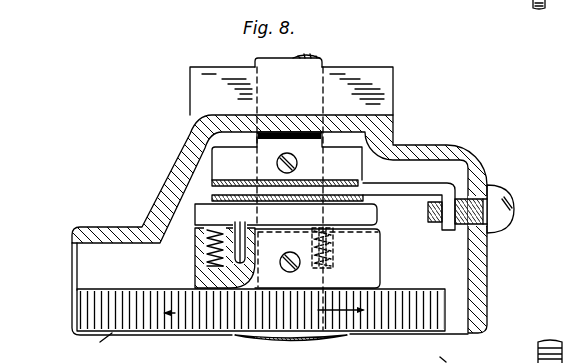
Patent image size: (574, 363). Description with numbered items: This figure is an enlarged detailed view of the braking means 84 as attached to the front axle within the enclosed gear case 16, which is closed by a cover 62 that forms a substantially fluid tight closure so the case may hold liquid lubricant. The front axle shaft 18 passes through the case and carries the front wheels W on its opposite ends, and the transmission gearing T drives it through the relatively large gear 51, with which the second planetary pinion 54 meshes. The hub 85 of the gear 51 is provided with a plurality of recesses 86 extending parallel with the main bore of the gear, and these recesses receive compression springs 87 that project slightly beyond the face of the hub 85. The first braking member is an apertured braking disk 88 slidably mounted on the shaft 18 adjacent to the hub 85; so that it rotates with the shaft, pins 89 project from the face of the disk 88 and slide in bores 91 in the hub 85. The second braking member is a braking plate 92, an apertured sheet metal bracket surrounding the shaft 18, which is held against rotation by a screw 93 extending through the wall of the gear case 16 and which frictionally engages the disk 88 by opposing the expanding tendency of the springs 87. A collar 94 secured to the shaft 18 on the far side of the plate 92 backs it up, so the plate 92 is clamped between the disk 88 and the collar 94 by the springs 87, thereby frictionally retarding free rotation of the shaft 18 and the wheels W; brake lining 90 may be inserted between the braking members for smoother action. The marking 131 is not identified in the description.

The gear case 16 is at (480, 160).
The front axle shaft 18 is at (322, 60).
The large gear 51 is at (437, 302).
The second planetary pinion 54 is at (83, 318).
The cover 62 is at (394, 76).
The braking means 84 is at (210, 160).
The hub 85 is at (380, 258).
The recesses 86 is at (378, 233).
The compression springs 87 is at (335, 249).
The braking disk 88 is at (205, 210).
The pins 89 is at (249, 245).
The brake lining 90 is at (363, 195).
The bores 91 is at (249, 272).
The braking plate 92 is at (413, 186).
The screw 93 is at (492, 190).
The collar 94 is at (360, 147).
The reference 131 is at (462, 354).
The transmission gearing T is at (113, 348).
The front wheels W is at (541, 8).